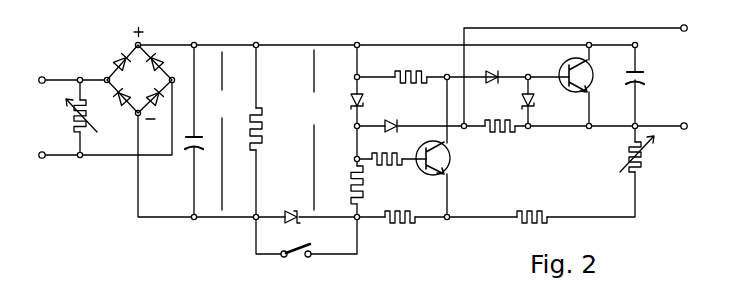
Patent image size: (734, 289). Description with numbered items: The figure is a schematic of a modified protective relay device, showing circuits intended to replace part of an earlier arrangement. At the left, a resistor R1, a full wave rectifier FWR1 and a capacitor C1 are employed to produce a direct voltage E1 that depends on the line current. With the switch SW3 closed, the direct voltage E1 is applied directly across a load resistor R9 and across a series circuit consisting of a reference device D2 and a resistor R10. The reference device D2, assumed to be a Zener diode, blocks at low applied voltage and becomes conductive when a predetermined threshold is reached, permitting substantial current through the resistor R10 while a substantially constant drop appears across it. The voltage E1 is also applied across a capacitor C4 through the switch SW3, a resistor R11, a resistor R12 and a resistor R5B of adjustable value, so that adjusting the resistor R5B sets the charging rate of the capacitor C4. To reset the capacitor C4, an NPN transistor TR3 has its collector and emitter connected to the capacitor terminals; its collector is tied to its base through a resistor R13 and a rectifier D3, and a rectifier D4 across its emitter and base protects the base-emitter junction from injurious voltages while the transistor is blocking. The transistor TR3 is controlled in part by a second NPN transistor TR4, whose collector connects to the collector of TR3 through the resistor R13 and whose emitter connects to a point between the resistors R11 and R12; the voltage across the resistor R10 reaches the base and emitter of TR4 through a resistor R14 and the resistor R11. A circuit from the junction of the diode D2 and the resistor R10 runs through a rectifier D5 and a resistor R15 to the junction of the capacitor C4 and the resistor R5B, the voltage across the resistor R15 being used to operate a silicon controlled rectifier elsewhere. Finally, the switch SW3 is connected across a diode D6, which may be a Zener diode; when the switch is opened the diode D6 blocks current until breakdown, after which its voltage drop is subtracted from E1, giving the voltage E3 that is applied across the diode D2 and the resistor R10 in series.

The full wave rectifier FWR1 is at (126, 52).
The resistor R1 is at (68, 125).
The capacitor C1 is at (191, 152).
The direct voltage E1 is at (222, 131).
The voltage E3 is at (314, 130).
The load resistor R9 is at (267, 130).
The diode D6 is at (290, 208).
The switch SW3 is at (305, 249).
The reference device D2 is at (353, 84).
The resistor R10 is at (350, 181).
The resistor R13 is at (406, 67).
The rectifier D5 is at (392, 117).
The resistor R14 is at (386, 167).
The transistor TR4 is at (452, 167).
The resistor R11 is at (396, 224).
The rectifier D3 is at (495, 67).
The rectifier D4 is at (520, 100).
The resistor R15 is at (491, 132).
The transistor TR3 is at (570, 61).
The capacitor C4 is at (618, 79).
The resistor R5B is at (618, 152).
The resistor R12 is at (528, 202).